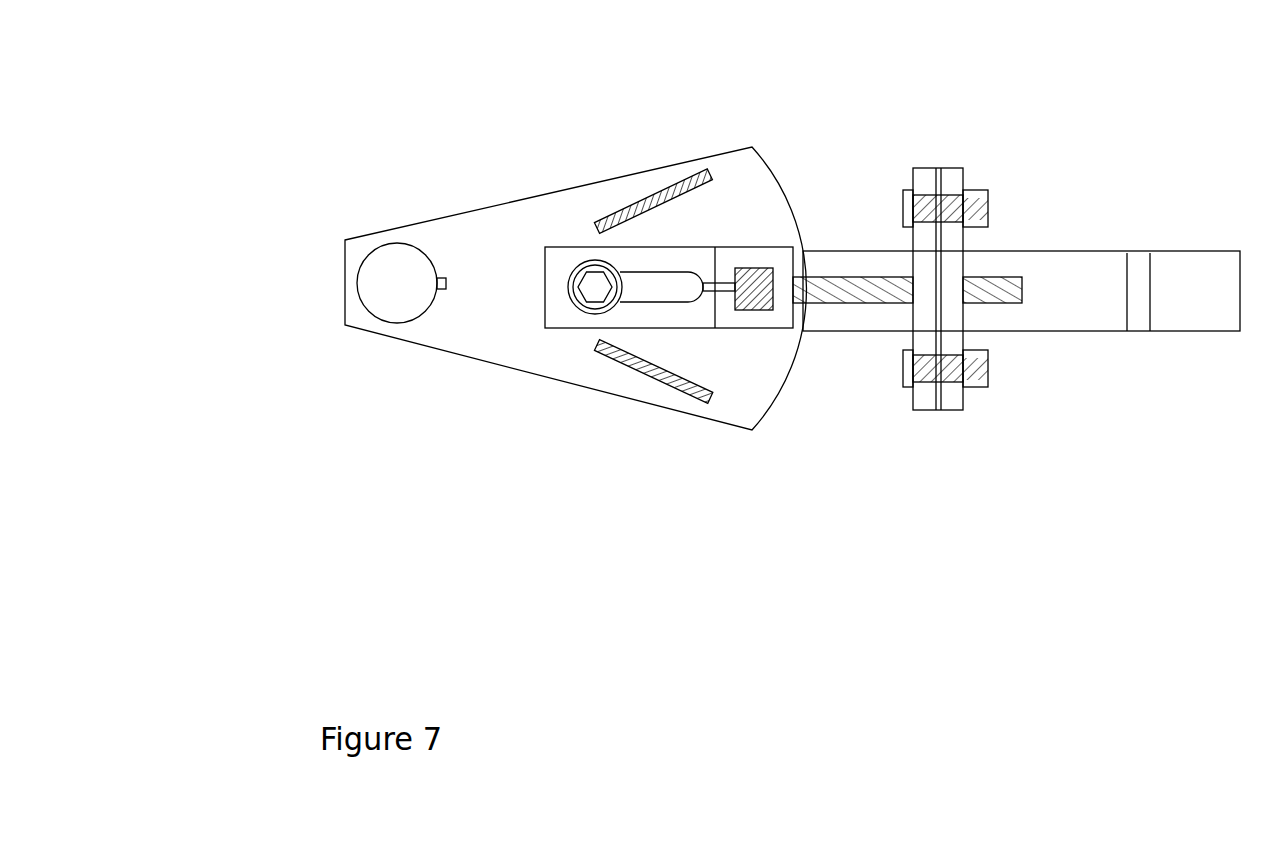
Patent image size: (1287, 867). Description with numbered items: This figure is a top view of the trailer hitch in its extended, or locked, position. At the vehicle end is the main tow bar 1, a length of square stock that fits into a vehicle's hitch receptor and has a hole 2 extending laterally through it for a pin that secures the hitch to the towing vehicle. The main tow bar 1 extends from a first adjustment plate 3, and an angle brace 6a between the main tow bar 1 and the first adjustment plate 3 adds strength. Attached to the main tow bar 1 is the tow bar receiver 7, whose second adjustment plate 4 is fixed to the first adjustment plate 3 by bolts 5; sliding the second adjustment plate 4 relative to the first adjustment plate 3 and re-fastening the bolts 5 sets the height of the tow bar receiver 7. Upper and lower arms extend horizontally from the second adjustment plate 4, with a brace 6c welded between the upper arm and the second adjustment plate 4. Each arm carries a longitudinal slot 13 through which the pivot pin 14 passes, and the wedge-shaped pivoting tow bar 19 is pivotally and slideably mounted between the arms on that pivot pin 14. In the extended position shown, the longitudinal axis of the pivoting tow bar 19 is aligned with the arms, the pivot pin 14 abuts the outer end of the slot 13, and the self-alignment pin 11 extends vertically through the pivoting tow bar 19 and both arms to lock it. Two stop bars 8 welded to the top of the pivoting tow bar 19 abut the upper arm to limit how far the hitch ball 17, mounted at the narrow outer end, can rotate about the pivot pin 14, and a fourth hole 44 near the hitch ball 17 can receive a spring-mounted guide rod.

The main tow bar 1 is at (1202, 333).
The hole 2 is at (1147, 278).
The first adjustment plate 3 is at (955, 410).
The second adjustment plate 4 is at (925, 407).
The bolts 5 is at (905, 365).
The angle brace 6a is at (992, 285).
The brace 6c is at (820, 285).
The tow bar receiver 7 is at (565, 250).
The stop bars 8 is at (675, 185).
The self-alignment pin 11 is at (757, 283).
The slot 13 is at (680, 292).
The pivot pin 14 is at (583, 298).
The hitch ball 17 is at (400, 248).
The pivoting tow bar 19 is at (452, 328).
The fourth hole 44 is at (444, 280).